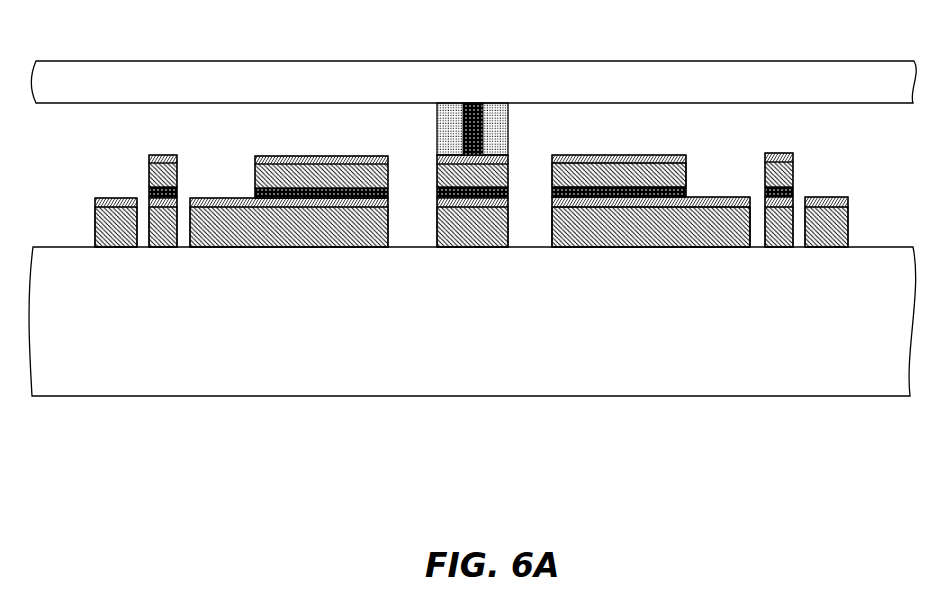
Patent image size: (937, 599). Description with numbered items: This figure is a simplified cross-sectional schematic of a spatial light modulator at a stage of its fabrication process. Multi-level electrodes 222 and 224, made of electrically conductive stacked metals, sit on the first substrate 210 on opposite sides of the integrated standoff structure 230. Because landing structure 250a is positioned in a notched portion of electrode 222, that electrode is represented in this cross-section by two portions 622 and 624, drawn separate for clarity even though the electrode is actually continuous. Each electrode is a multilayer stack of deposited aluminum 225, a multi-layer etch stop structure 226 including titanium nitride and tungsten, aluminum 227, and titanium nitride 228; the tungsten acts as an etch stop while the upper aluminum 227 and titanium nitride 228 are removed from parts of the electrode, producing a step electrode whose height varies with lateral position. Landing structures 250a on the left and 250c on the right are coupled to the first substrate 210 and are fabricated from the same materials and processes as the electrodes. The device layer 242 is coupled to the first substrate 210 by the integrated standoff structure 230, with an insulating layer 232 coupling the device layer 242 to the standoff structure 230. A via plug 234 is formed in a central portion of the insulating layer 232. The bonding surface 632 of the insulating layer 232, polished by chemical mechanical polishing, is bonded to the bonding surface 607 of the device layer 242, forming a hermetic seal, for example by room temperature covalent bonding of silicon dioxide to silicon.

The device layer 242 is at (881, 92).
The first substrate 210 is at (881, 372).
The portion of electrode 622 is at (113, 180).
The landing structure 250a is at (163, 263).
The electrode 222 is at (290, 292).
The portion of electrode 624 is at (290, 147).
The integrated standoff structure 230 is at (470, 263).
The insulating layer 232 is at (450, 131).
The via plug 234 is at (475, 102).
The bonding surface 632 is at (446, 104).
The bonding surface 607 is at (537, 105).
The electrode 224 is at (633, 297).
The deposited aluminum layer 225 is at (660, 228).
The titanium nitride layer 228 is at (620, 157).
The aluminum layer 227 is at (682, 178).
The landing structure 250c is at (780, 258).
The multi-layer etch stop structure 226 is at (797, 203).